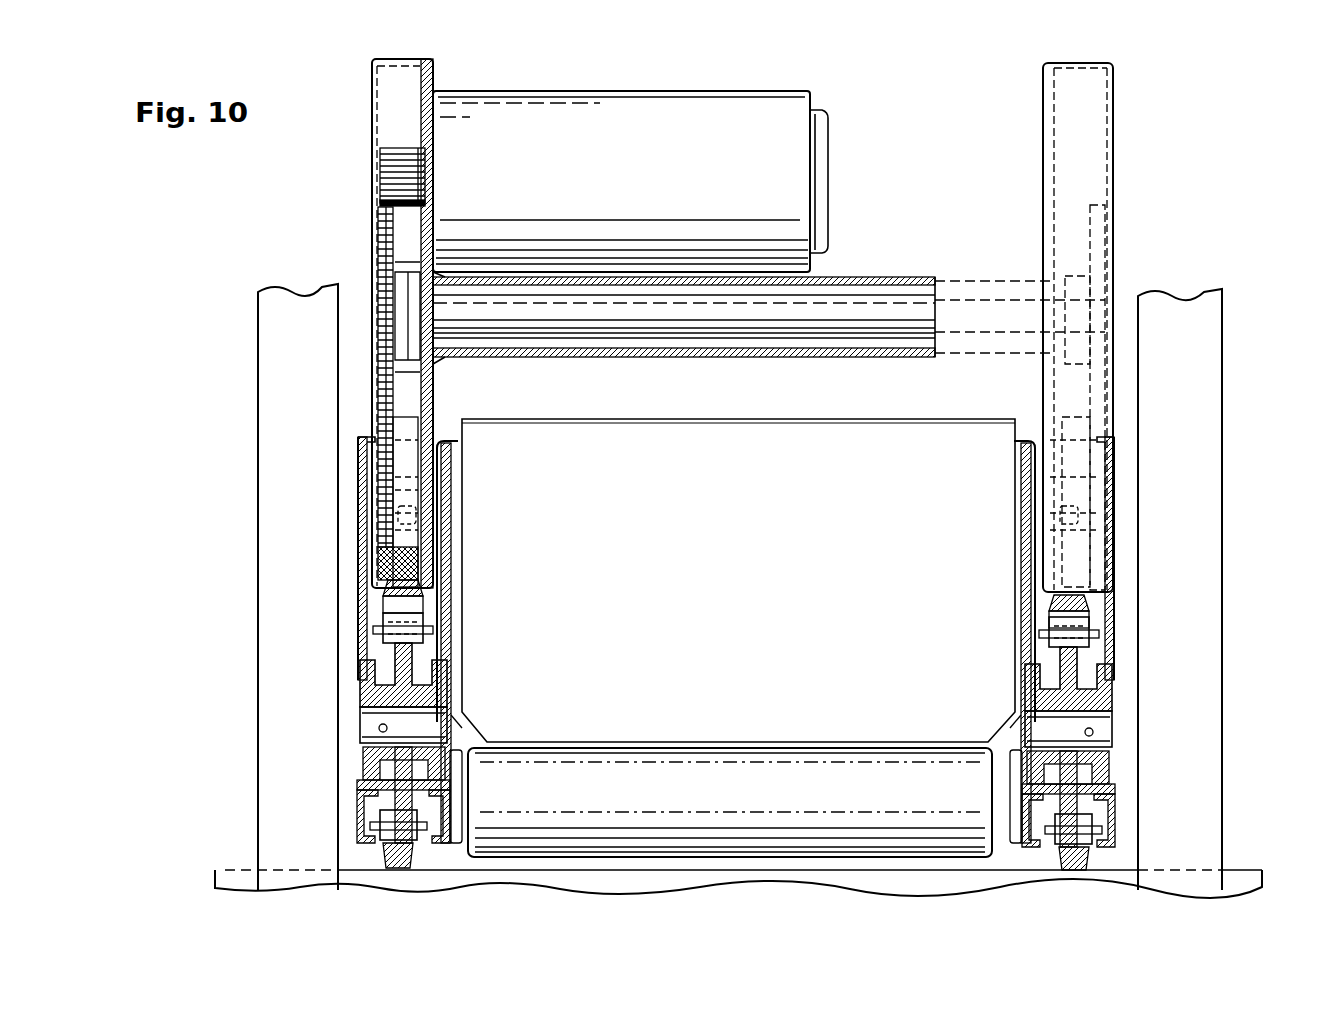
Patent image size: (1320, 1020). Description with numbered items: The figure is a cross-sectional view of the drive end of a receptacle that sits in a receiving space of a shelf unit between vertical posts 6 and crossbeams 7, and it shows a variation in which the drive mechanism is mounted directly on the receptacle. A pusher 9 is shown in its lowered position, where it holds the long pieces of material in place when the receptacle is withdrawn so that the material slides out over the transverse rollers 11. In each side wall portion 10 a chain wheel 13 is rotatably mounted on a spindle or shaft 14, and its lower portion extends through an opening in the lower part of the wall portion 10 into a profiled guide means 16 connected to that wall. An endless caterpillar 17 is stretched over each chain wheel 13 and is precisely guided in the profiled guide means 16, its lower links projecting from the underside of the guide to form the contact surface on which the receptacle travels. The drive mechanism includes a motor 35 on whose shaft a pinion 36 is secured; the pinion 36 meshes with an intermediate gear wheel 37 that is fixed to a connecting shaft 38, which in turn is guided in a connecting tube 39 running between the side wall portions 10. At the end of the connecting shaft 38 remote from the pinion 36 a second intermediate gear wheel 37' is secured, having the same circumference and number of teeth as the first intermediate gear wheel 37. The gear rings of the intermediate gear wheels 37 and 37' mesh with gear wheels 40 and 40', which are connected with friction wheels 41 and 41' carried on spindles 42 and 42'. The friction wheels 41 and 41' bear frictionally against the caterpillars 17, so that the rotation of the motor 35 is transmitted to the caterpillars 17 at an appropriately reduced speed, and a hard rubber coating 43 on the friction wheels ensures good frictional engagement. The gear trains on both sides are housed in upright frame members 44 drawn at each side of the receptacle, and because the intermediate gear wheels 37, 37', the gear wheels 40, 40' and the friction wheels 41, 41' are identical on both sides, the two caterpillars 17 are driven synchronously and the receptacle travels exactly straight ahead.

The post 6 is at (268, 510).
The crossbeam 7 is at (1234, 884).
The pusher 9 is at (738, 517).
The side wall portion 10 is at (460, 461).
The roller 11 is at (712, 770).
The chain wheel 13 is at (402, 681).
The spindle or shaft 14 is at (378, 722).
The profiled guide means 16 is at (362, 813).
The caterpillar 17 is at (385, 621).
The motor 35 is at (733, 100).
The pinion 36 is at (400, 153).
The intermediate gear wheel 37 is at (345, 377).
The second intermediate gear wheel 37' is at (1141, 397).
The connecting shaft 38 is at (848, 312).
The connecting tube 39 is at (900, 280).
The gear wheel 40 is at (329, 551).
The gear wheel 40' is at (1146, 551).
The friction wheel 41 is at (351, 482).
The friction wheel 41' is at (1122, 482).
The spindle 42 is at (464, 505).
The spindle 42' is at (1007, 505).
The hard rubber coating 43 is at (392, 589).
The lifting frame 44 is at (372, 75).